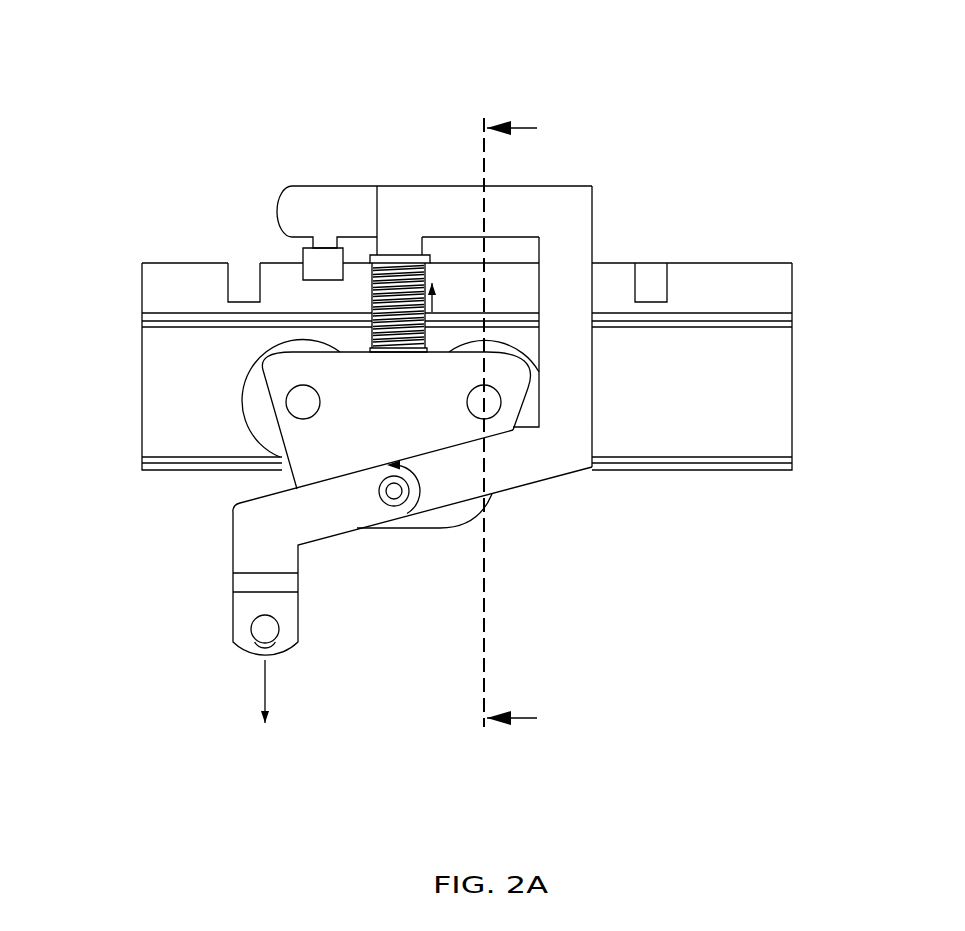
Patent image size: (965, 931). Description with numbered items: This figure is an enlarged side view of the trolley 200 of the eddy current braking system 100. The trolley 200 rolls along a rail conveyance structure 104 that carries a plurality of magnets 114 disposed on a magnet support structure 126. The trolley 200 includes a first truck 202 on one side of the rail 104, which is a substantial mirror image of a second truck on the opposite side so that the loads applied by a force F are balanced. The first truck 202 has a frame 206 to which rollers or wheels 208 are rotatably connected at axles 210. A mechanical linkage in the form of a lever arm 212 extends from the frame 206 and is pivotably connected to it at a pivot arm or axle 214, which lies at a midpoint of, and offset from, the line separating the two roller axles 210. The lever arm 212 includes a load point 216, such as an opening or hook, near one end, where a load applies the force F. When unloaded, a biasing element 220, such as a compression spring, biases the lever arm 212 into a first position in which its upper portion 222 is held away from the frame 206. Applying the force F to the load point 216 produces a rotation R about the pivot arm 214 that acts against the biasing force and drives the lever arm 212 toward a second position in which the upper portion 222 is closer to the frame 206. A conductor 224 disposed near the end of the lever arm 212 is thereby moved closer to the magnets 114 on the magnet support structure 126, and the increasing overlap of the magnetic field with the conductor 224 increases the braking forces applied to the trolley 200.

The eddy current braking system 100 is at (860, 105).
The rail conveyance structure 104 is at (750, 402).
The magnets 114 is at (238, 280).
The magnet support structure 126 is at (743, 280).
The trolley 200 is at (178, 533).
The first truck 202 is at (595, 562).
The frame 206 is at (438, 438).
The rollers or wheels 208 is at (240, 368).
The axles 210 is at (302, 403).
The lever arm 212 is at (561, 449).
The pivot arm or axle 214 is at (395, 490).
The load point 216 is at (267, 631).
The biasing element 220 is at (425, 270).
The upper portion 222 is at (398, 208).
The conductor 224 is at (320, 268).